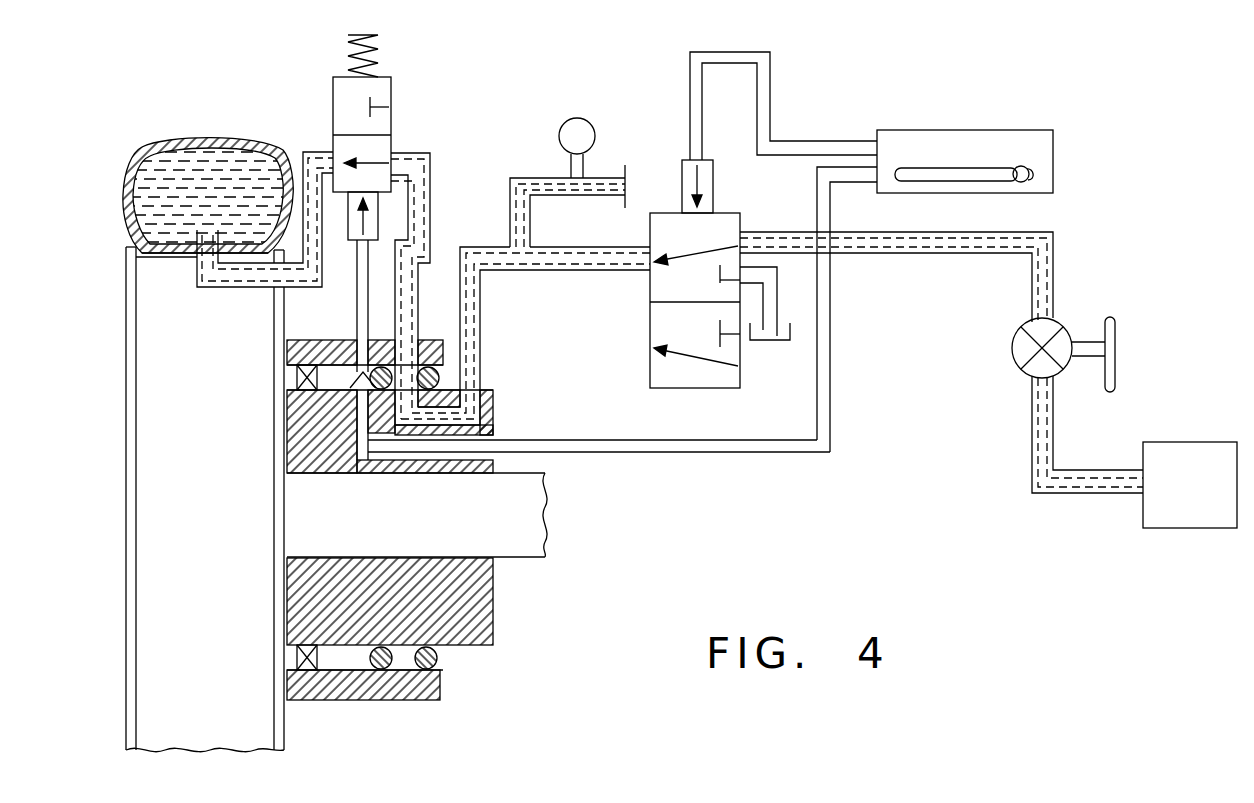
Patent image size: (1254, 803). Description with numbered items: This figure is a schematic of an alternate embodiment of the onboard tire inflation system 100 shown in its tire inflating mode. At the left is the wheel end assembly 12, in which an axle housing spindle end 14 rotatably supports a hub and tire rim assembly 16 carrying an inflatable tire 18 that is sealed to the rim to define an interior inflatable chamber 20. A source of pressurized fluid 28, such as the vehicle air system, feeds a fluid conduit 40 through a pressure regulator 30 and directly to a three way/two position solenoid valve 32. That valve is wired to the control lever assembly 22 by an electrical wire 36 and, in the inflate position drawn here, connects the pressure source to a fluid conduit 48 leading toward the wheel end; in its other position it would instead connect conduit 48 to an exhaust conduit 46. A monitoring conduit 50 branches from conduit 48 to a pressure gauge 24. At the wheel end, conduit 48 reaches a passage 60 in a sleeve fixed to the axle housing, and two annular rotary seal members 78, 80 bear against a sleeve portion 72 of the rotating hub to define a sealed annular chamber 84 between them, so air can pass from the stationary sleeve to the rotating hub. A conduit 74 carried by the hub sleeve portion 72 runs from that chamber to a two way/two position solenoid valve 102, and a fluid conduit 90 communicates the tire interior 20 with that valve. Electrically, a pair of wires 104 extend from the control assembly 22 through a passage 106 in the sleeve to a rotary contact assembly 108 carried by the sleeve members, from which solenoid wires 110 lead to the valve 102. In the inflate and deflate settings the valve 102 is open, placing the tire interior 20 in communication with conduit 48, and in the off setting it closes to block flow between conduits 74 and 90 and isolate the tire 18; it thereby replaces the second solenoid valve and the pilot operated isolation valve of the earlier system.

The wheel end assembly 12 is at (436, 718).
The axle housing spindle end 14 is at (520, 517).
The hub and tire rim assembly 16 is at (126, 495).
The inflatable tire 18 is at (125, 192).
The interior inflatable chamber 20 is at (163, 173).
The control lever assembly 22 is at (1053, 148).
The pressure gauge 24 is at (578, 118).
The source of pressurized fluid 28 is at (1180, 442).
The pressure regulator 30 is at (1010, 346).
The three way/two position solenoid valve 32 is at (640, 339).
The electrical wire 36 is at (770, 97).
The fluid conduit 40 is at (800, 232).
The exhaust conduit 46 is at (777, 290).
The fluid conduit 48 is at (598, 247).
The monitoring conduit 50 is at (550, 180).
The passage 60 is at (495, 428).
The sleeve portion of the hub 72 is at (430, 686).
The conduit 74 is at (432, 188).
The annular rotary seal member 78 is at (428, 647).
The annular rotary seal member 80 is at (381, 647).
The sealed annular chamber 84 is at (404, 660).
The fluid conduit 90 is at (255, 275).
The alternate embodiment of the onboard tire inflation system 100 is at (654, 78).
The two way/two position solenoid valve 102 is at (415, 126).
The electrical wires 104 is at (830, 213).
The passage 106 is at (625, 410).
The rotary contact assembly 108 is at (342, 395).
The solenoid wires 110 is at (357, 312).